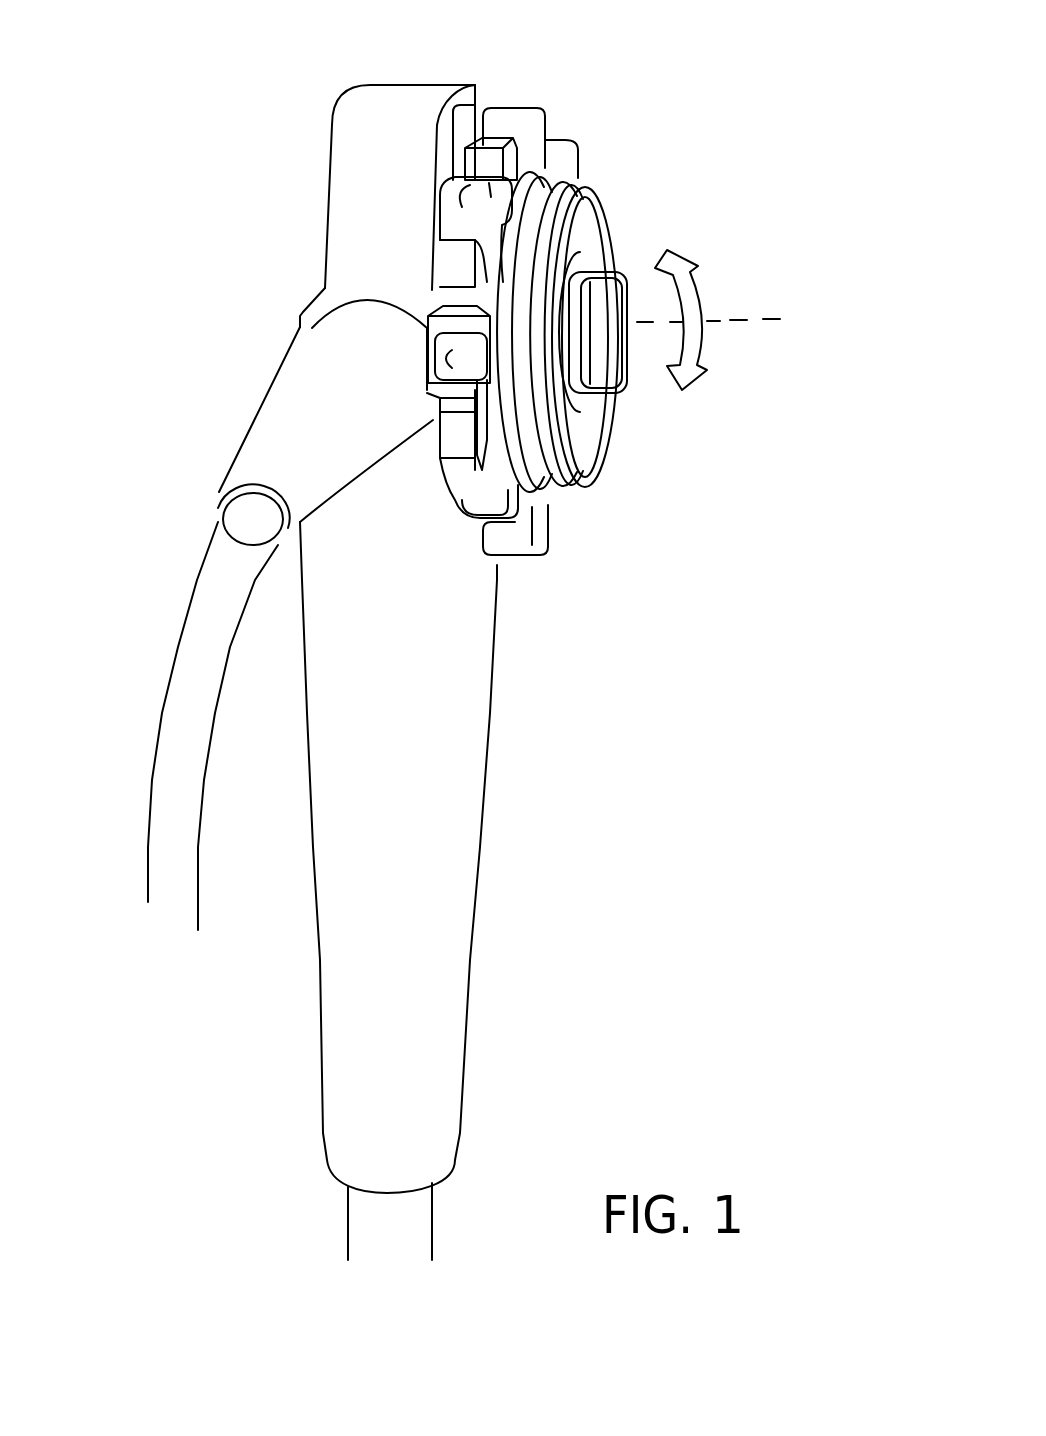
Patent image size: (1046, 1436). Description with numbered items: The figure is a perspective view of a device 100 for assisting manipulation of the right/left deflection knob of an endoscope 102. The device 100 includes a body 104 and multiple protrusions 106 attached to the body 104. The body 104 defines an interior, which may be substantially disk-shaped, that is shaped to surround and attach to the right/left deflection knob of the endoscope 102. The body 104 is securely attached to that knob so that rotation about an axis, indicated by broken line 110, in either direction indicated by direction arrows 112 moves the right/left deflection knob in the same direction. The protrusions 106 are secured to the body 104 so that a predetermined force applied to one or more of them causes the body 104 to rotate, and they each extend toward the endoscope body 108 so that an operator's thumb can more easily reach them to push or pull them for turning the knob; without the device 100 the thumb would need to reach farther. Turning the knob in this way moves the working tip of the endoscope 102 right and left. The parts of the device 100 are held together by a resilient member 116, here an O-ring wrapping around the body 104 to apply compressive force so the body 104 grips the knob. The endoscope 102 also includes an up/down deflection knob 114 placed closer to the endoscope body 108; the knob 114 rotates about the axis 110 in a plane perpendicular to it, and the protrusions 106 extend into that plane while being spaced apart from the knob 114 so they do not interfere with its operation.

The device 100 is at (602, 323).
The endoscope 102 is at (332, 197).
The body 104 is at (588, 186).
The protrusions 106 is at (486, 178).
The endoscope body 108 is at (297, 325).
The axis 110 is at (732, 316).
The direction arrows 112 is at (705, 345).
The up/down deflection knob 114 is at (433, 457).
The resilient member 116 is at (530, 430).